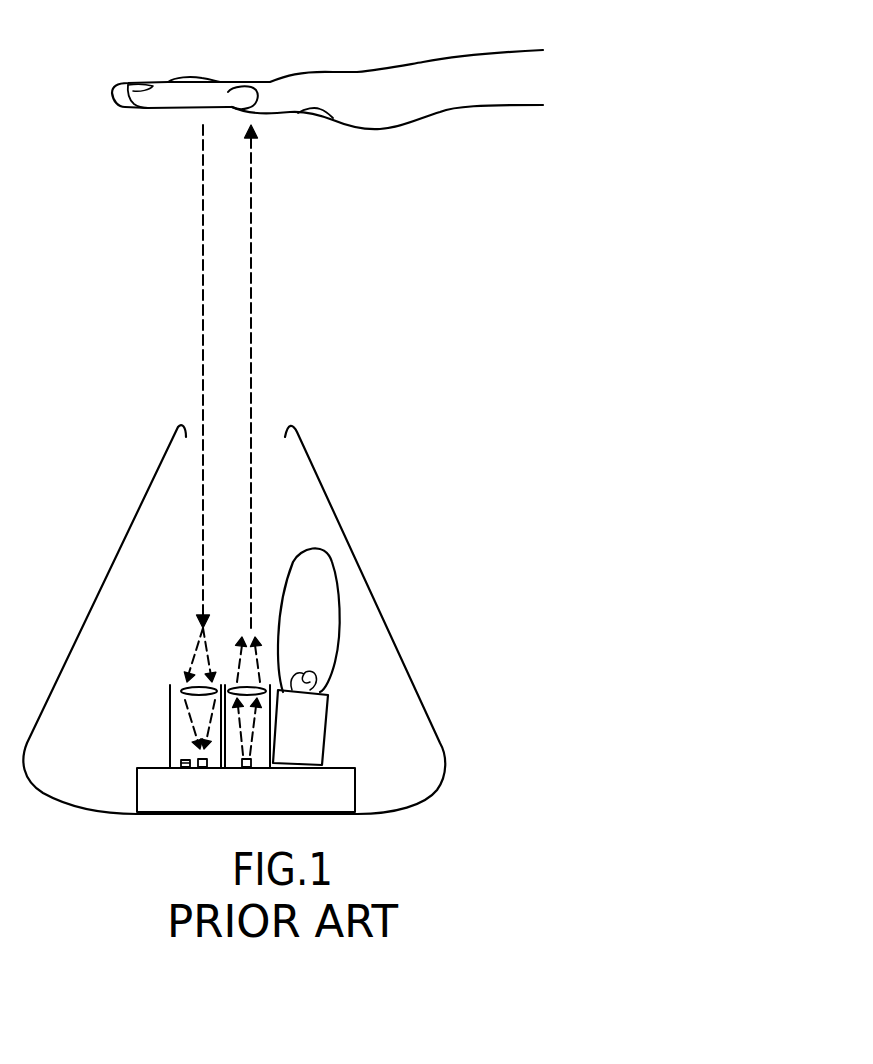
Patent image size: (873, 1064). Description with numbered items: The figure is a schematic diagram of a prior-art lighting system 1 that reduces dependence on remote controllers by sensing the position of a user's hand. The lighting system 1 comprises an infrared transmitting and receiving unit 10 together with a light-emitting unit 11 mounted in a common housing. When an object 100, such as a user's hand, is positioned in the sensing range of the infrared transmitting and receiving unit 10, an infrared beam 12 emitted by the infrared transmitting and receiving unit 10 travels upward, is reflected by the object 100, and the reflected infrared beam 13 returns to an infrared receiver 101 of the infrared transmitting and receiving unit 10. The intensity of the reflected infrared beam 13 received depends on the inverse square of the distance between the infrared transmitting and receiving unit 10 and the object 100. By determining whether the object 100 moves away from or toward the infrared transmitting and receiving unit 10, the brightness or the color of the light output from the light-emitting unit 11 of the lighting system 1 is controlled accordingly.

The lighting system 1 is at (330, 503).
The infrared transmitting and receiving unit 10 is at (168, 703).
The infrared receiver 101 is at (195, 760).
The light-emitting unit 11 is at (320, 625).
The infrared beam 12 is at (252, 308).
The reflected infrared beam 13 is at (202, 313).
The object 100 is at (460, 68).